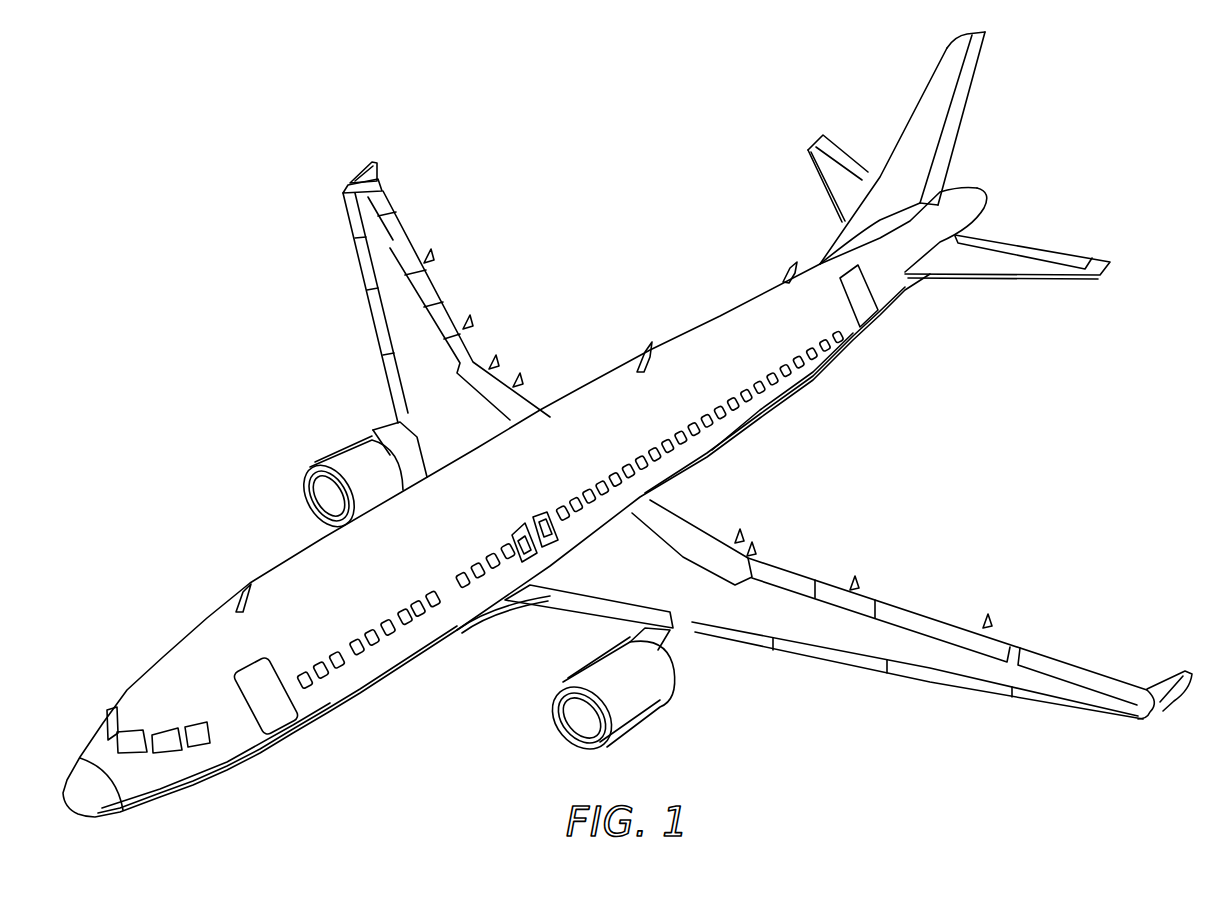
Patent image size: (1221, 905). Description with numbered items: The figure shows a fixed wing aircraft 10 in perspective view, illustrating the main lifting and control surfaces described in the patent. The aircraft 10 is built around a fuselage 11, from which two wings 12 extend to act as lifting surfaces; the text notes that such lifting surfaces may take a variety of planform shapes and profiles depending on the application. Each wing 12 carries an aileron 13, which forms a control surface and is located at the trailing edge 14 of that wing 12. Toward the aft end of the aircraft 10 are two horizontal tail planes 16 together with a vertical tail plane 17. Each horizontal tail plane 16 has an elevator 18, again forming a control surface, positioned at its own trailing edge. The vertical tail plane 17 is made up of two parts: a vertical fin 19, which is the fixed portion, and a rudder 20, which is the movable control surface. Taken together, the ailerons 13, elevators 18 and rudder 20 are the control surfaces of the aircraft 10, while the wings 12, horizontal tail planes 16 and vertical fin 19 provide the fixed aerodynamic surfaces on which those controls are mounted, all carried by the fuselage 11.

The fixed wing aircraft 10 is at (650, 124).
The fuselage 11 is at (608, 378).
The wing 12 is at (392, 302).
The aileron 13 is at (388, 212).
The trailing edge 14 is at (442, 290).
The horizontal tail plane 16 is at (828, 173).
The vertical tail plane 17 is at (936, 114).
The elevator 18 is at (842, 157).
The vertical fin 19 is at (927, 90).
The rudder 20 is at (975, 68).